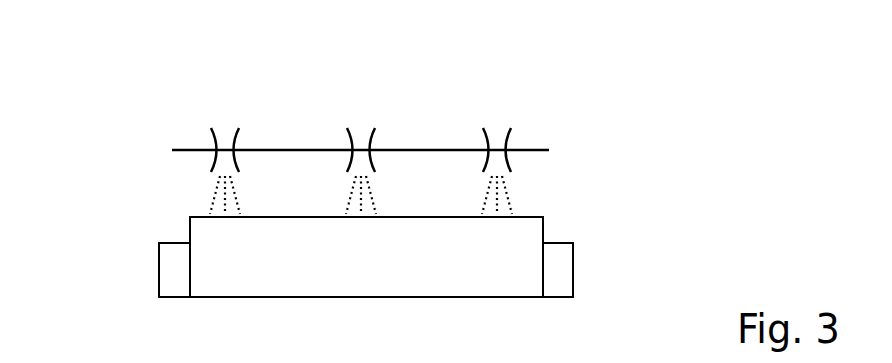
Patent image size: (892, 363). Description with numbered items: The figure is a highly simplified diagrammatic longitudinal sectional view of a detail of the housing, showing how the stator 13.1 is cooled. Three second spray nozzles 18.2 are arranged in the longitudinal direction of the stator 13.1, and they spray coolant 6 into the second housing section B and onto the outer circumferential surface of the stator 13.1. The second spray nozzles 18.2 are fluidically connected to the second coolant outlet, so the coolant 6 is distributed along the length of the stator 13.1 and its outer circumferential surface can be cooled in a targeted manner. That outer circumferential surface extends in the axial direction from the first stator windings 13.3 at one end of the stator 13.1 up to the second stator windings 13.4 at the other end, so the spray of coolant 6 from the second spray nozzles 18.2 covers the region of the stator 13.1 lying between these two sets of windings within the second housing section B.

The stator 13.1 is at (225, 246).
The first stator windings 13.3 is at (173, 268).
The second stator windings 13.4 is at (559, 260).
The second spray nozzle 18.2 is at (217, 115).
The coolant 6 is at (245, 190).
The second housing section B is at (437, 203).